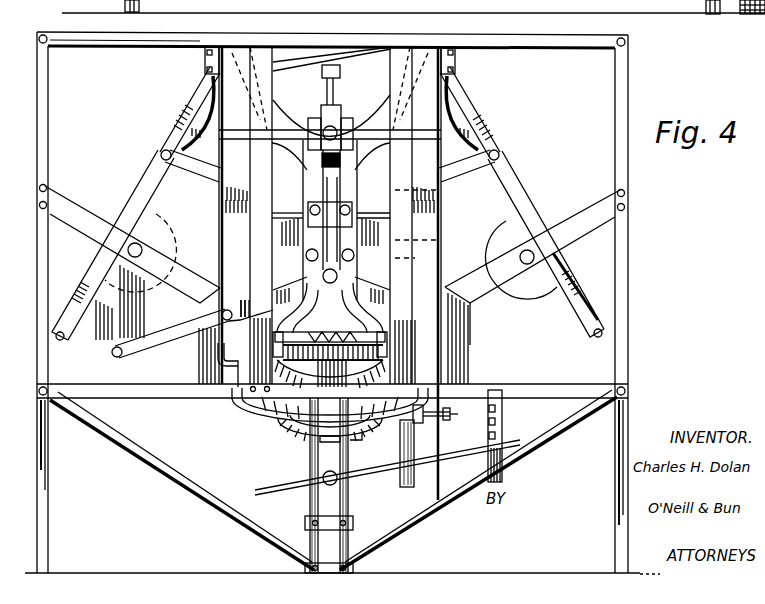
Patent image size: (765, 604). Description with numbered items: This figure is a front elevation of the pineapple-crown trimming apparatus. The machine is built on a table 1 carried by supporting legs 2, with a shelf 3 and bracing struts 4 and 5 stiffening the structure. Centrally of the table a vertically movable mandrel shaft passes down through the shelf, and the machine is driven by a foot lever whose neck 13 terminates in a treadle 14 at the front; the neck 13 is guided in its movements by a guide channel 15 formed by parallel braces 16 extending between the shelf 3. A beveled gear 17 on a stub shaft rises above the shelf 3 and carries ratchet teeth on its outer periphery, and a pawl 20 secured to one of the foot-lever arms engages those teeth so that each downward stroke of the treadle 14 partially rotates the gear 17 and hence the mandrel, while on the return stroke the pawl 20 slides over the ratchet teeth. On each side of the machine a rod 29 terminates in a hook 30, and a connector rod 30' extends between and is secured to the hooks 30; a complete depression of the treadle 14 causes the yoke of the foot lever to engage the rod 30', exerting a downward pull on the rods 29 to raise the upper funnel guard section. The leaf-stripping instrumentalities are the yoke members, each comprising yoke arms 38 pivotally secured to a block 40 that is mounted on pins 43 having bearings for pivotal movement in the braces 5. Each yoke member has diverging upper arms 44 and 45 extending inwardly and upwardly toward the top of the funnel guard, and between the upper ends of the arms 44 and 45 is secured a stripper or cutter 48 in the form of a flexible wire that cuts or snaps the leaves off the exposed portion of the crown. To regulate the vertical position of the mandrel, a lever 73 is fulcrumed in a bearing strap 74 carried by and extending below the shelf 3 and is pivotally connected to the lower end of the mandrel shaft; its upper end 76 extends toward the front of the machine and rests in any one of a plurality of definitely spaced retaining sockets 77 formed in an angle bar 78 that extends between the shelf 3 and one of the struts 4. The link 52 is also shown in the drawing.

The table 1 is at (523, 38).
The supporting legs 2 is at (48, 515).
The shelf 3 is at (160, 390).
The bracing struts 4 is at (149, 459).
The bracing struts 5 is at (176, 268).
The neck 13 is at (292, 425).
The treadle 14 is at (298, 450).
The guide channel 15 is at (362, 441).
The parallel braces 16 is at (309, 497).
The beveled gear 17 is at (342, 443).
The pawl 20 is at (404, 362).
The rod 29 is at (221, 215).
The hook 30 is at (442, 409).
The connector rod 30' is at (463, 416).
The yoke arm 38 is at (517, 190).
The block 40 is at (547, 280).
The pins 43 is at (560, 255).
The diverging arm 44 is at (195, 92).
The diverging arm 45 is at (468, 84).
The stripper or cutter 48 is at (296, 62).
The link 52 is at (140, 317).
The lever 73 is at (452, 460).
The bearing strap 74 is at (412, 458).
The upper end of the lever 76 is at (545, 428).
The retaining sockets 77 is at (505, 430).
The angle bar 78 is at (505, 411).